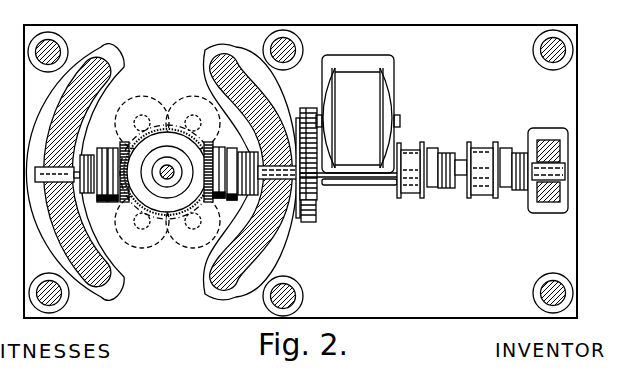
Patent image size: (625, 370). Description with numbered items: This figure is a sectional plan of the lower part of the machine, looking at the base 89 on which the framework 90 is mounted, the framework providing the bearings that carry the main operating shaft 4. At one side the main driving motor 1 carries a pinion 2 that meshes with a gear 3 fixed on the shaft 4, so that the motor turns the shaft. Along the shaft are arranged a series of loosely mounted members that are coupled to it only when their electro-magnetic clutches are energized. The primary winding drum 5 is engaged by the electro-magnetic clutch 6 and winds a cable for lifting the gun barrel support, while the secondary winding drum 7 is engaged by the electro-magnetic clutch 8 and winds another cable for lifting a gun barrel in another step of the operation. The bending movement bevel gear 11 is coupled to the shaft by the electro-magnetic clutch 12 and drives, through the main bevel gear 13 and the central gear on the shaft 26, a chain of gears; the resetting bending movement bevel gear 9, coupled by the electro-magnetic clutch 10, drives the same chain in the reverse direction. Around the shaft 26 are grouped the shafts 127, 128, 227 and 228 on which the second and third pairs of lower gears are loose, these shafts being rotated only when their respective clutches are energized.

The main driving motor 1 is at (373, 105).
The pinion 2 is at (302, 112).
The gear 3 is at (310, 204).
The main operating shaft 4 is at (370, 177).
The primary winding drum 5 is at (485, 186).
The electro-magnetic clutch 6 is at (513, 188).
The secondary winding drum 7 is at (418, 184).
The electro-magnetic clutch 8 is at (440, 186).
The resetting bending movement bevel gear 9 is at (212, 199).
The electro-magnetic clutch 10 is at (240, 199).
The bending movement bevel gear 11 is at (118, 204).
The electro-magnetic clutch 12 is at (100, 204).
The main bevel gear 13 is at (197, 143).
The shaft 26 is at (164, 176).
The base 89 is at (560, 253).
The framework 90 is at (216, 68).
The shaft 127 is at (146, 245).
The shaft 128 is at (192, 121).
The shaft 227 is at (140, 118).
The shaft 228 is at (190, 230).